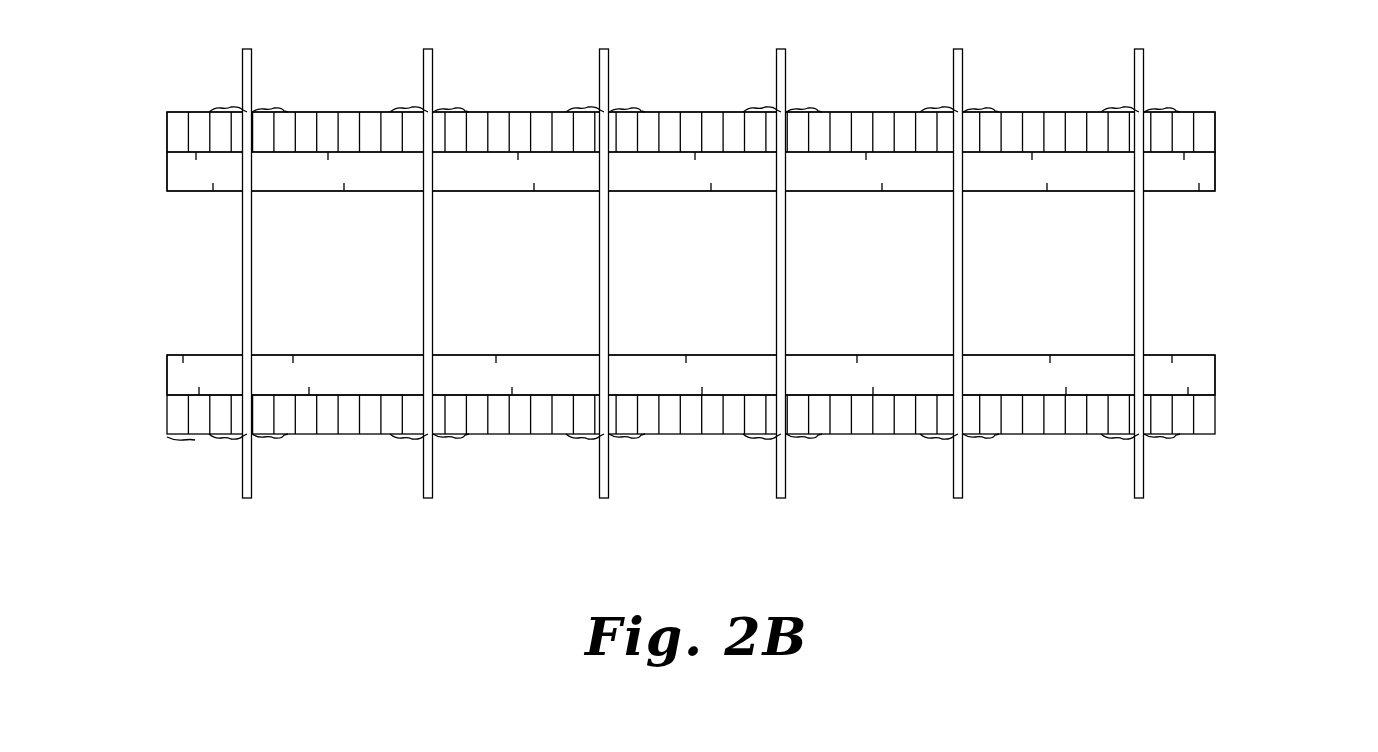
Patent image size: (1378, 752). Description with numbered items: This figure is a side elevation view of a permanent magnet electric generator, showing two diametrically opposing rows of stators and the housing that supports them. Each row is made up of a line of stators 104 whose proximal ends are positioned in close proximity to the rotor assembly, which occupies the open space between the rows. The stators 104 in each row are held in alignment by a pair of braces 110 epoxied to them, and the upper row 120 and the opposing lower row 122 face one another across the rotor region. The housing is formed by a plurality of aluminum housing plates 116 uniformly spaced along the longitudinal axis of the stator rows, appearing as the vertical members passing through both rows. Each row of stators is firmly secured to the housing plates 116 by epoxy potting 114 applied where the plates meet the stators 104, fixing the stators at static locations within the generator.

The stator 104 is at (167, 112).
The brace 110 is at (167, 190).
The epoxy potting 114 is at (1119, 108).
The housing plate 116 is at (423, 276).
The stator row 120 is at (1218, 168).
The opposing stator row 122 is at (1218, 397).